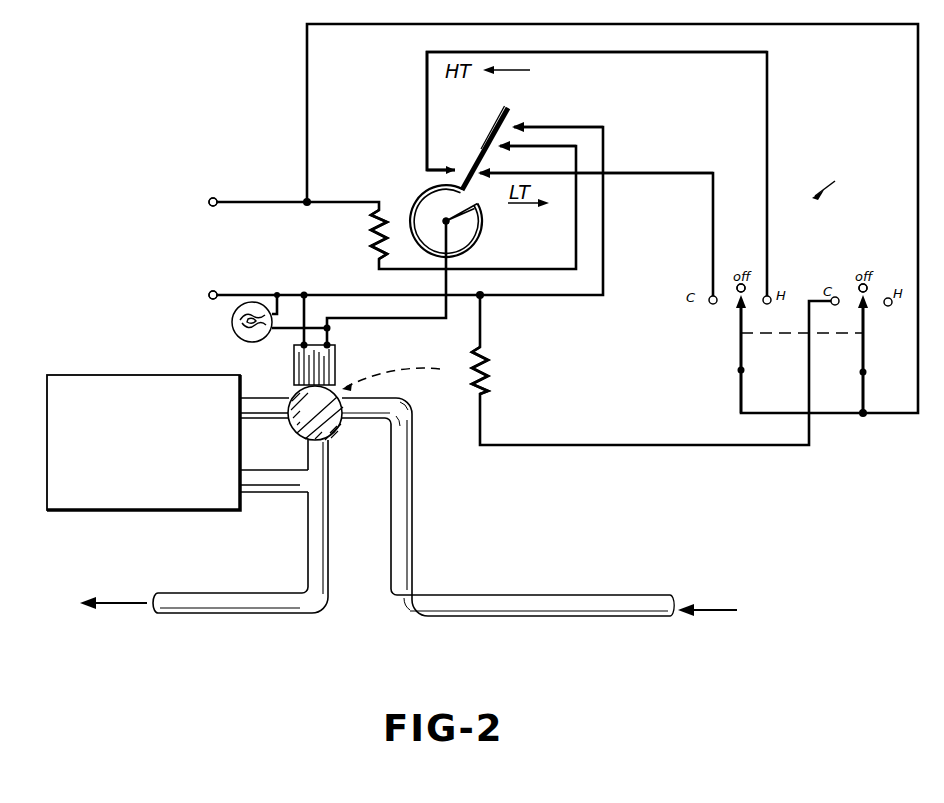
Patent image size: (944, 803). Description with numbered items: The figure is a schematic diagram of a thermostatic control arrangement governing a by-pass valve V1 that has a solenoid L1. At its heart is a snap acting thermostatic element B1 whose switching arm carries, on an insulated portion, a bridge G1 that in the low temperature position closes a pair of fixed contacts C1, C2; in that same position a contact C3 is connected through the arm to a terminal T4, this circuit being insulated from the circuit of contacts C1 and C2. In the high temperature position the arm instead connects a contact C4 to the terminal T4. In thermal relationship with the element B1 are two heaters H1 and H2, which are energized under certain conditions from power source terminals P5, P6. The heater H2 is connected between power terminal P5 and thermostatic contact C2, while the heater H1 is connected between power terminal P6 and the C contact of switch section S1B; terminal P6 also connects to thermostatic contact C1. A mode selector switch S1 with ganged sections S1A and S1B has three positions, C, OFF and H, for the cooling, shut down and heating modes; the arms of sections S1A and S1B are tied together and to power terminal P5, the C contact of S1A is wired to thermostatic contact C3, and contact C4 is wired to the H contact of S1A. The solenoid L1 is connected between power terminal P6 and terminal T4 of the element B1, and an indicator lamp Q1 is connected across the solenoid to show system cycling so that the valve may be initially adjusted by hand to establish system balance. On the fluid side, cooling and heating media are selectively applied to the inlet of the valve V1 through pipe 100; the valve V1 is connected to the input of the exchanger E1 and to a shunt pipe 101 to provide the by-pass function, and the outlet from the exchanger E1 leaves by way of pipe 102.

The power source terminal P5 is at (215, 191).
The power source terminal P6 is at (215, 283).
The heater H2 is at (376, 238).
The heater H1 is at (488, 391).
The lamp Q1 is at (236, 332).
The solenoid L1 is at (340, 371).
The by-pass valve V1 is at (291, 393).
The exchanger E1 is at (143, 461).
The pipe 100 is at (413, 509).
The shunt pipe 101 is at (324, 458).
The pipe 102 is at (202, 599).
The snap acting thermostatic element B1 is at (542, 259).
The terminal T4 is at (437, 224).
The bridge G1 is at (510, 115).
The fixed contact C1 is at (534, 128).
The fixed contact C2 is at (527, 146).
The contact C3 is at (505, 172).
The contact C4 is at (460, 168).
The mode selector switch S1 is at (820, 284).
The switch section S1A is at (745, 373).
The switch section S1B is at (866, 375).